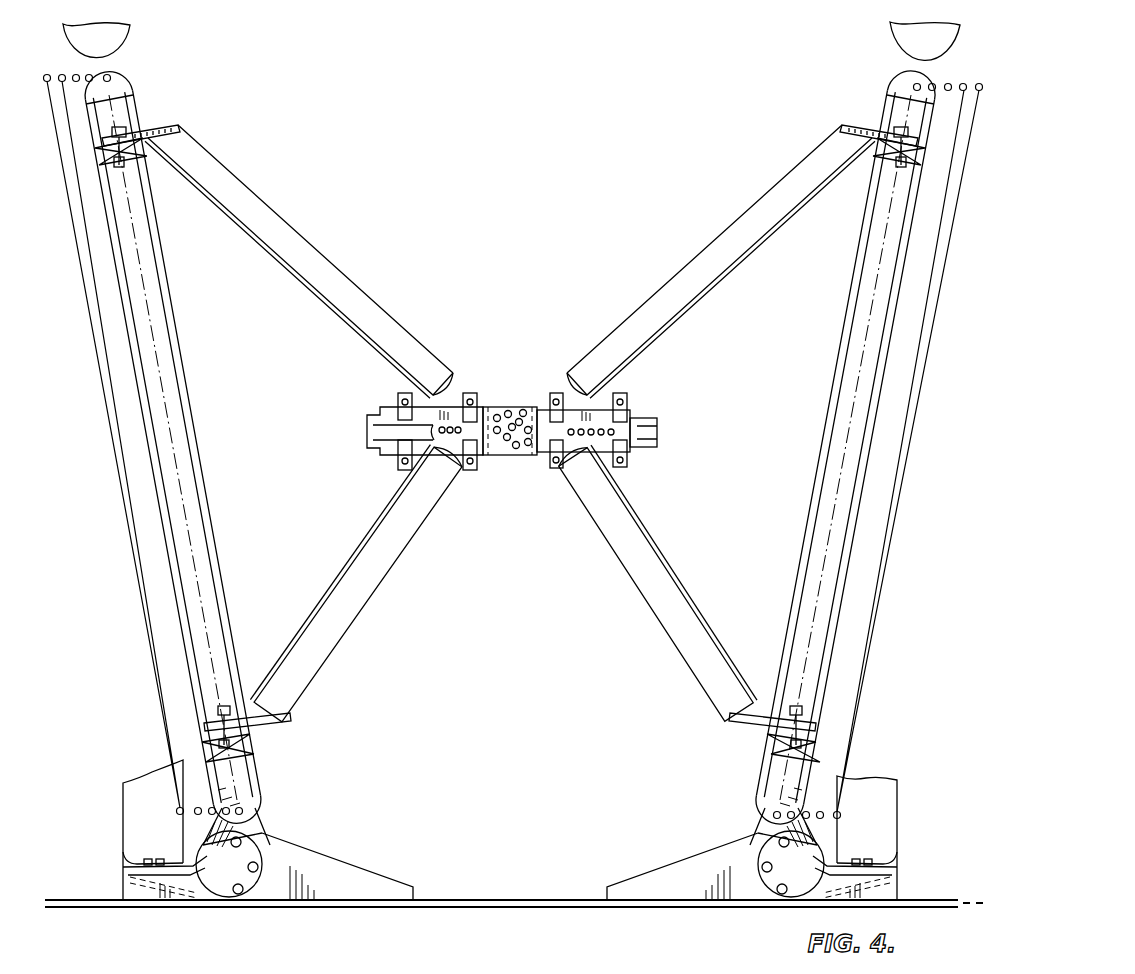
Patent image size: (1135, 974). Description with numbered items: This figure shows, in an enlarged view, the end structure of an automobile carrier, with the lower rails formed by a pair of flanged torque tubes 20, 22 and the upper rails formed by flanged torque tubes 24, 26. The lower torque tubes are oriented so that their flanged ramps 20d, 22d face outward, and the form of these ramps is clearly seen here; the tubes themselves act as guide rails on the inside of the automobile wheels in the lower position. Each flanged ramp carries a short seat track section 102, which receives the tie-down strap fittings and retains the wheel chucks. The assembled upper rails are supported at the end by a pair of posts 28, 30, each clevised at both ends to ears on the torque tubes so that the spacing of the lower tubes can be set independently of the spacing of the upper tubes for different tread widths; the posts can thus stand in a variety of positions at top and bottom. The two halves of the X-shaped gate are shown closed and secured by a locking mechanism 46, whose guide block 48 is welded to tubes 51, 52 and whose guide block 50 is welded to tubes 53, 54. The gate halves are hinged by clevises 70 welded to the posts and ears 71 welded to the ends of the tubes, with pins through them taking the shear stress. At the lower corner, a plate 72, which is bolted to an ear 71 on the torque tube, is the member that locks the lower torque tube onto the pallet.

The flanged torque tube 20 is at (838, 843).
The flanged ramp 20d is at (905, 888).
The flanged torque tube 22 is at (170, 838).
The flanged ramp 22d is at (128, 888).
The flanged torque tube 24 is at (898, 36).
The flanged torque tube 26 is at (117, 36).
The post 28 is at (209, 512).
The post 30 is at (827, 415).
The locking mechanism 46 is at (522, 575).
The guide block 48 is at (398, 478).
The guide block 50 is at (630, 398).
The tube 51 is at (274, 224).
The tube 52 is at (360, 608).
The tube 53 is at (712, 249).
The tube 54 is at (669, 572).
The clevis 70 is at (265, 797).
The ear 71 is at (262, 829).
The plate 72 is at (340, 872).
The seat track section 102 is at (145, 862).